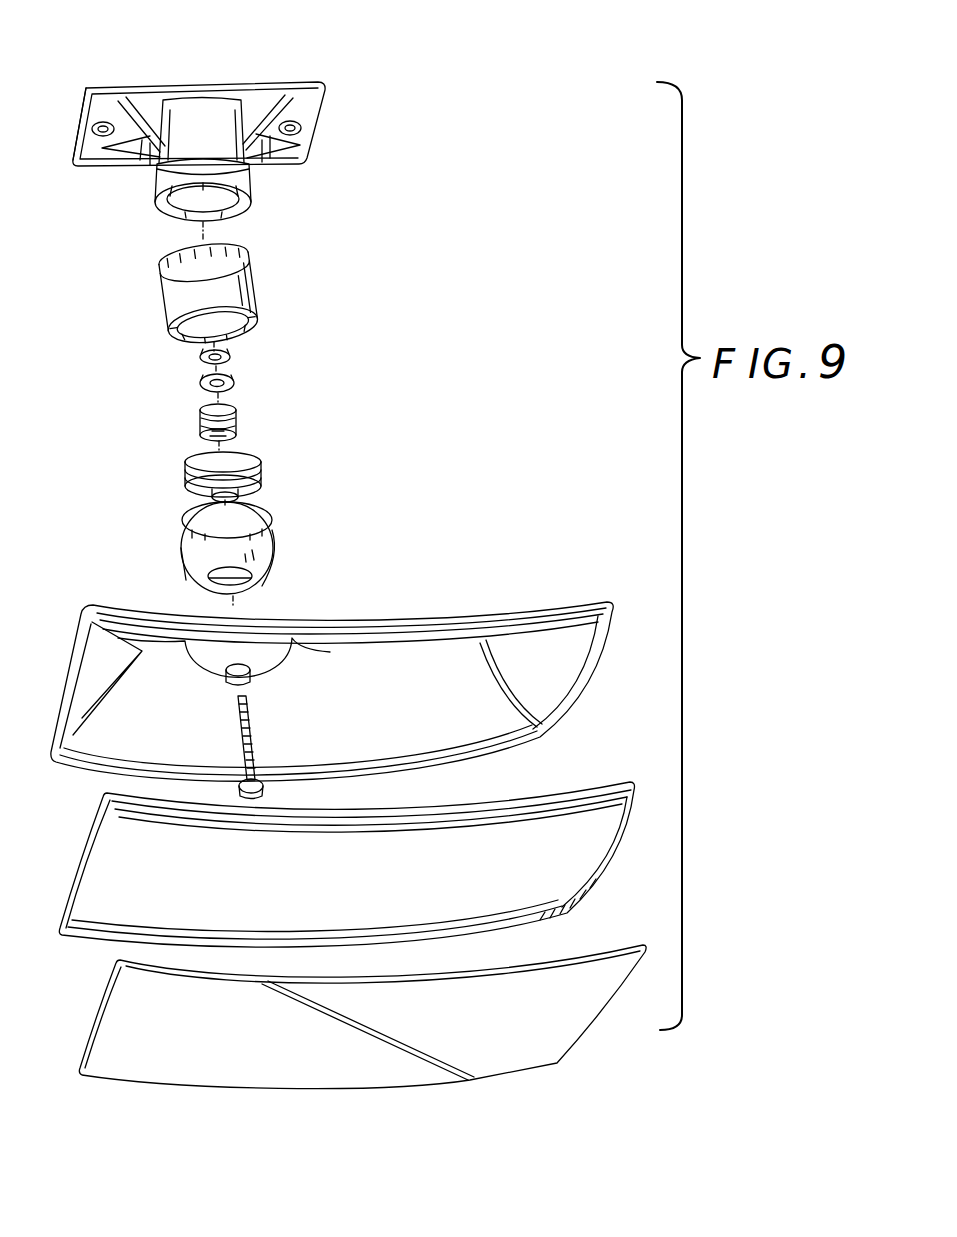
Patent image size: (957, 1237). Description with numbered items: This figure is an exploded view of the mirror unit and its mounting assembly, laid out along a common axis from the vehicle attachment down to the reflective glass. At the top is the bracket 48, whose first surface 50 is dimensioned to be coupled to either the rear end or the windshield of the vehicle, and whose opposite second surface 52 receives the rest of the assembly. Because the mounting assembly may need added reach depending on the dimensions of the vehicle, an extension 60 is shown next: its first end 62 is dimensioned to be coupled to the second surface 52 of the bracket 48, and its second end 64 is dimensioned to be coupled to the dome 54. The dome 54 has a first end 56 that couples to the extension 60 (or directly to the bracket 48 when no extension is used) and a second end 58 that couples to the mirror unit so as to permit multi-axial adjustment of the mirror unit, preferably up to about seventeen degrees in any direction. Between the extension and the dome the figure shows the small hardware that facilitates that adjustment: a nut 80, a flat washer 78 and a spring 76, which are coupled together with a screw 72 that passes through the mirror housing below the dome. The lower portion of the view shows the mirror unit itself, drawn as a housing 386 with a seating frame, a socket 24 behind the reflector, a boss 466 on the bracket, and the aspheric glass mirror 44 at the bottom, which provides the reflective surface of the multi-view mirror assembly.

The bulb socket 24 is at (262, 462).
The aspheric glass mirror 44 is at (240, 1050).
The bracket 48 is at (307, 80).
The first surface 50 is at (130, 82).
The second surface 52 is at (233, 188).
The dome 54 is at (281, 548).
The first end 56 is at (270, 502).
The second end 58 is at (180, 573).
The extension 60 is at (267, 293).
The first end 62 is at (240, 247).
The second end 64 is at (257, 335).
The screw 72 is at (225, 748).
The spring 76 is at (240, 430).
The flat washer 78 is at (227, 380).
The nut 80 is at (203, 353).
The lamp housing 386 is at (524, 600).
The boss 466 is at (200, 77).